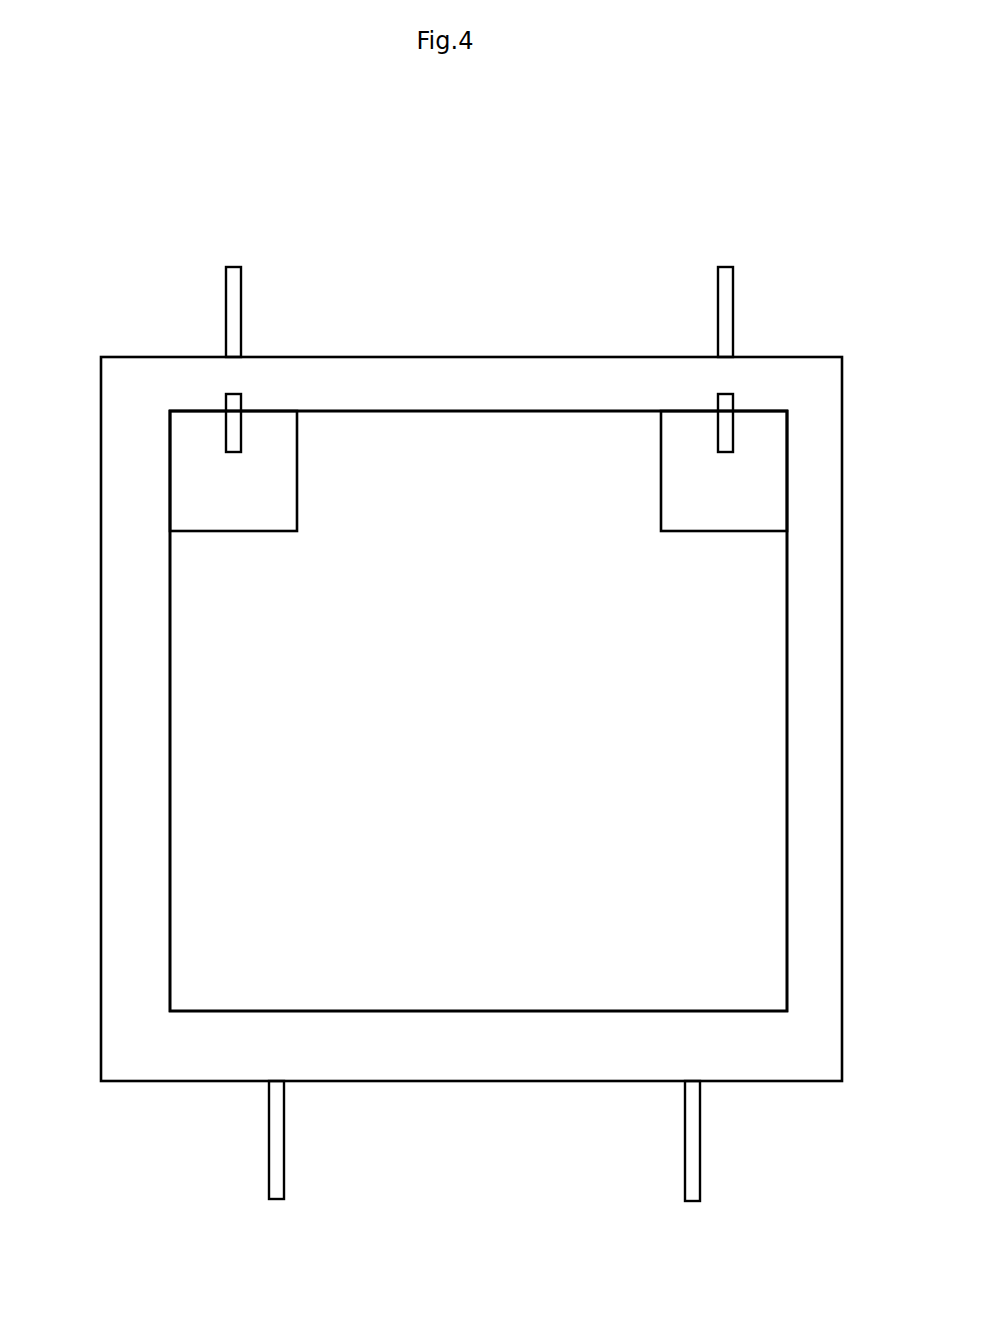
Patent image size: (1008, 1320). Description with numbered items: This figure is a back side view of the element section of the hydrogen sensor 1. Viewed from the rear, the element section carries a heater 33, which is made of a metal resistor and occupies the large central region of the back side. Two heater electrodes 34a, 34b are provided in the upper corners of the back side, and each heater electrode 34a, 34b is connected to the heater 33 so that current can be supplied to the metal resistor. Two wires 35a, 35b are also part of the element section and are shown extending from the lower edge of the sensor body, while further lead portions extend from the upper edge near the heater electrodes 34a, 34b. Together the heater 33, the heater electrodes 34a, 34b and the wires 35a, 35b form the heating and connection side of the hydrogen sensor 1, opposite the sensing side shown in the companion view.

The hydrogen sensor 1 is at (436, 258).
The heater 33 is at (263, 785).
The heater electrode 34a is at (194, 465).
The heater electrode 34b is at (753, 458).
The wire 35a is at (277, 1141).
The wire 35b is at (692, 1143).